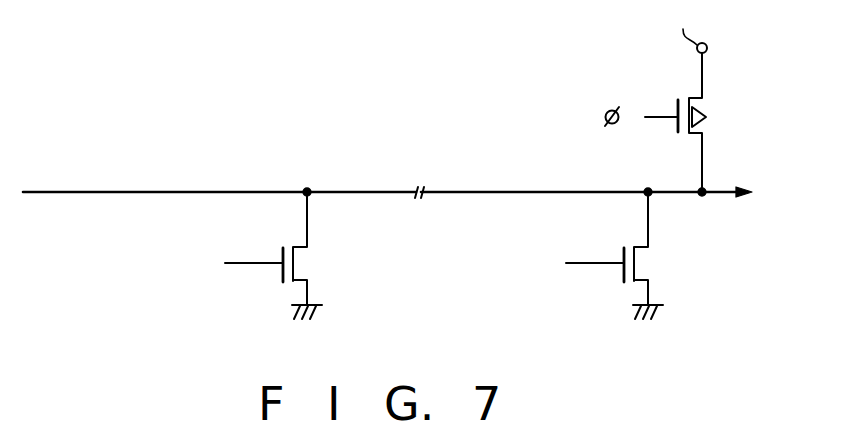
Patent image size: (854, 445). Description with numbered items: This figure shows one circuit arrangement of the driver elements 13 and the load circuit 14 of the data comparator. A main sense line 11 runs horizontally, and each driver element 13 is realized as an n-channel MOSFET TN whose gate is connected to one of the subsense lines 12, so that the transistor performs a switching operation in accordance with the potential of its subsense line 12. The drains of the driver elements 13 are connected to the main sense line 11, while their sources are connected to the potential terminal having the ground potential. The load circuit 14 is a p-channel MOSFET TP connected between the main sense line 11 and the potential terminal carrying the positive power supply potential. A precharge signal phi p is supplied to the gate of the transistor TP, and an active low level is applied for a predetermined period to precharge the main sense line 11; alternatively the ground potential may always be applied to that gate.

The main sense line 11 is at (384, 190).
The subsense line 12 is at (252, 262).
The driver element 13 is at (318, 242).
The load circuit 14 is at (717, 99).